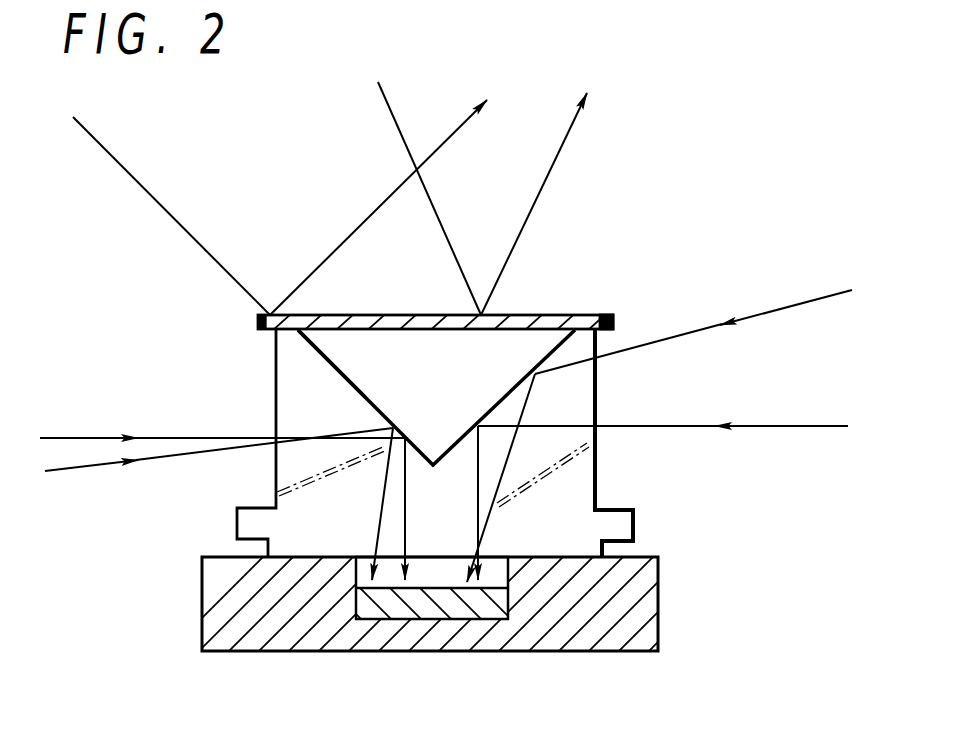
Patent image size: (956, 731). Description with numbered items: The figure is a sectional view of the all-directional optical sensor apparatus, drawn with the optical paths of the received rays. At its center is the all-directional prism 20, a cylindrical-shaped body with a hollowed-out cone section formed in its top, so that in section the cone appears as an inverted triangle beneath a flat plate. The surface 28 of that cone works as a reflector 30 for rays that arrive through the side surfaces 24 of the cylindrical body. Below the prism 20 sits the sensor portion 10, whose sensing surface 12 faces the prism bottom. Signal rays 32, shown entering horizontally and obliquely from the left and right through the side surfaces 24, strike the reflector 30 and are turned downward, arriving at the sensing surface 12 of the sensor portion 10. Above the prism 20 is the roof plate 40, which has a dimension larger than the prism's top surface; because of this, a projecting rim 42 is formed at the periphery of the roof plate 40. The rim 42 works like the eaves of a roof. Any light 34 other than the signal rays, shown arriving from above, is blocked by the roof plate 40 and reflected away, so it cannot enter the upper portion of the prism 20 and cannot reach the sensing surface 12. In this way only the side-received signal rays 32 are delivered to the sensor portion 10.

The sensor portion 10 is at (662, 610).
The sensing surface 12 is at (436, 616).
The all-directional prism 20 is at (600, 395).
The side surfaces 24 is at (598, 468).
The surface of the cone 28 is at (385, 415).
The reflector 30 is at (328, 365).
The signal rays 32 is at (80, 437).
The light other than the signal rays 34 is at (142, 183).
The roof plate 40 is at (528, 311).
The projecting rim 42 is at (609, 316).